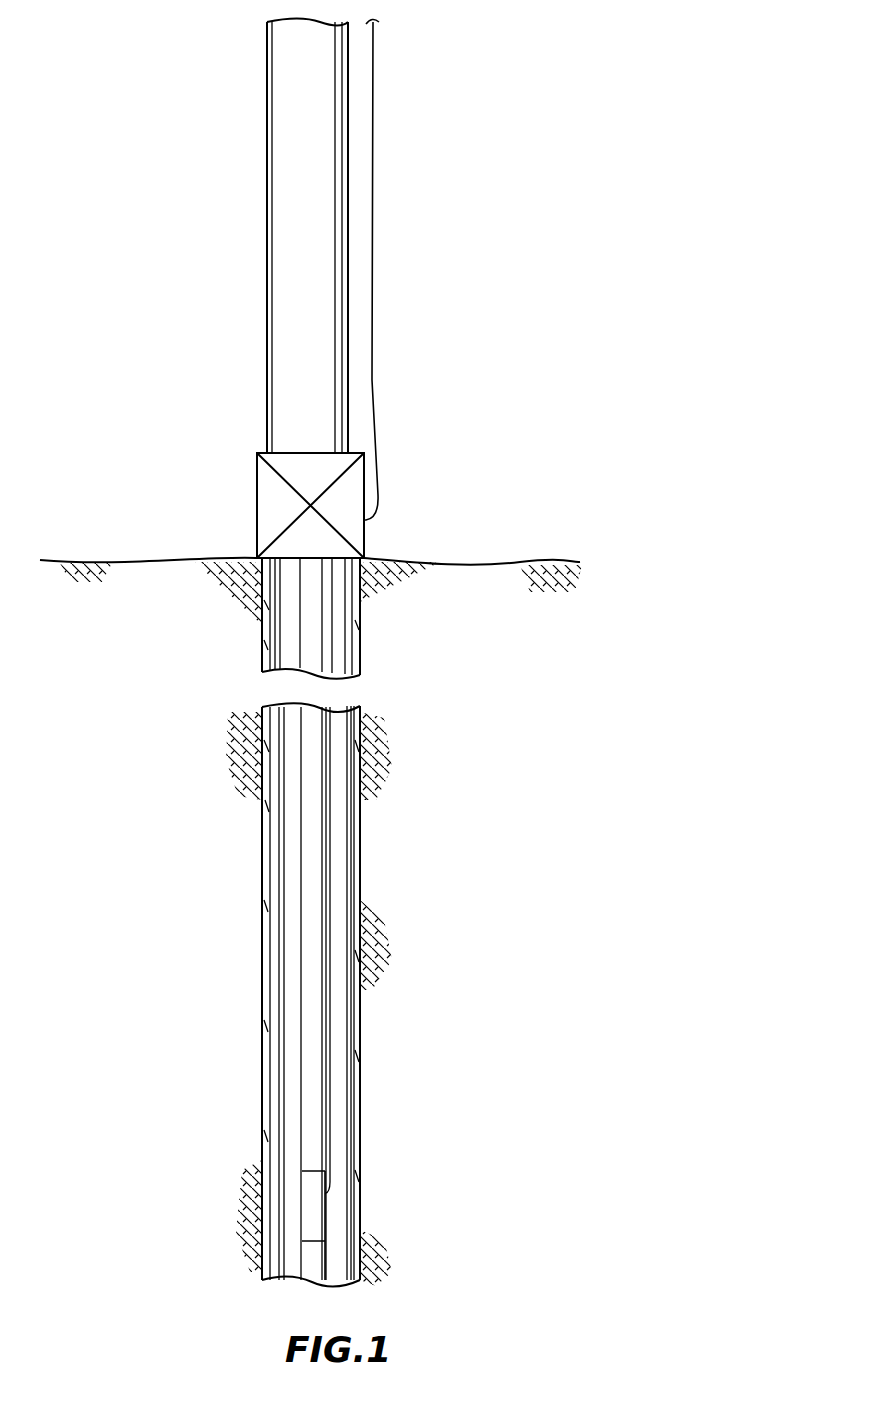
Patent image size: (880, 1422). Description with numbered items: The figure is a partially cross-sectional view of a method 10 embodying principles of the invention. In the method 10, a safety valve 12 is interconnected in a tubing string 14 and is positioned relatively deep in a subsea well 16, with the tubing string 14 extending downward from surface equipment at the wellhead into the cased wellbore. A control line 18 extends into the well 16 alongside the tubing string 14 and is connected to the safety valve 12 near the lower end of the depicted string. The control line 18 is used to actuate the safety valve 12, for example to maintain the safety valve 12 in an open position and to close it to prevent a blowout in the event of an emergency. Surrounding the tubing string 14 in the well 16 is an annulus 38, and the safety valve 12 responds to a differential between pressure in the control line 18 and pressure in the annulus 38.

The method 10 is at (547, 197).
The safety valve 12 is at (326, 1219).
The tubing string 14 is at (301, 873).
The subsea well 16 is at (443, 873).
The control line 18 is at (332, 1040).
The annulus 38 is at (293, 1066).